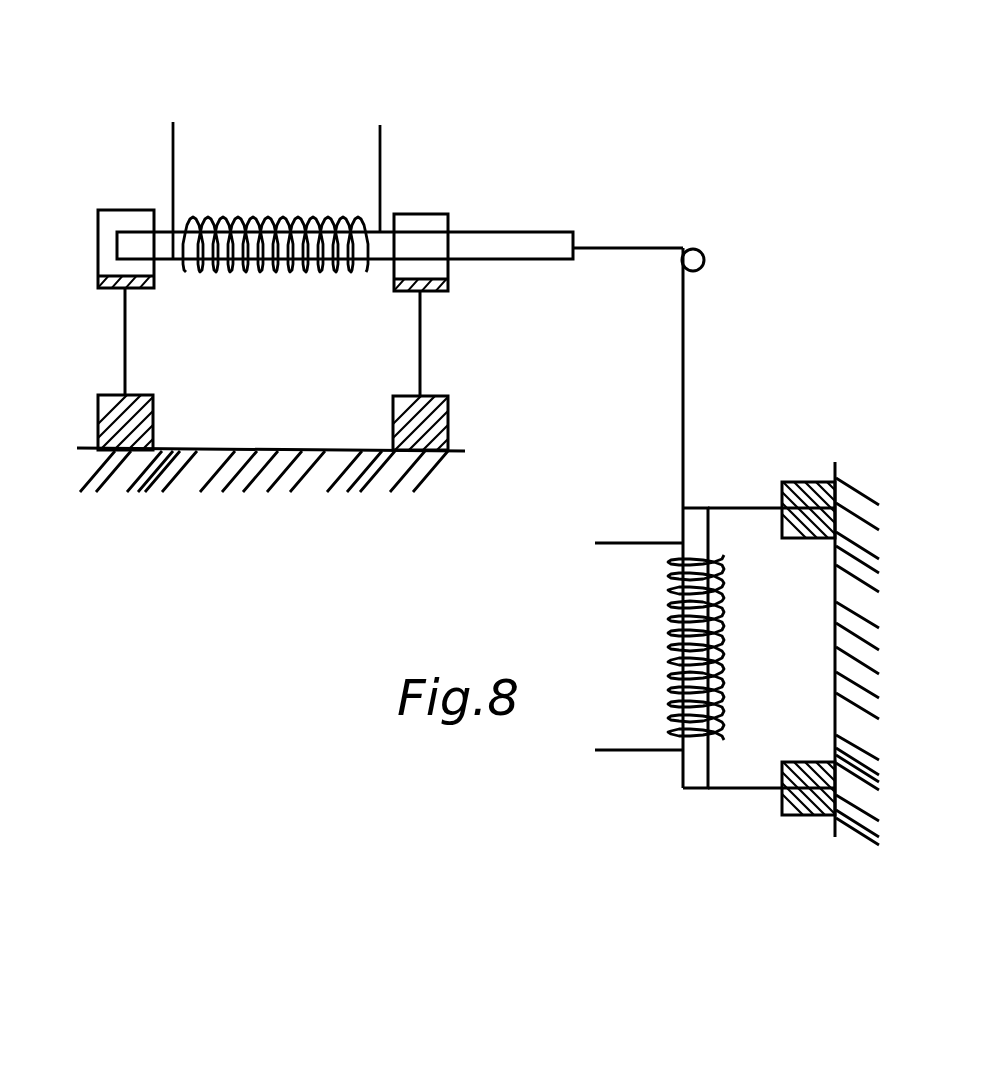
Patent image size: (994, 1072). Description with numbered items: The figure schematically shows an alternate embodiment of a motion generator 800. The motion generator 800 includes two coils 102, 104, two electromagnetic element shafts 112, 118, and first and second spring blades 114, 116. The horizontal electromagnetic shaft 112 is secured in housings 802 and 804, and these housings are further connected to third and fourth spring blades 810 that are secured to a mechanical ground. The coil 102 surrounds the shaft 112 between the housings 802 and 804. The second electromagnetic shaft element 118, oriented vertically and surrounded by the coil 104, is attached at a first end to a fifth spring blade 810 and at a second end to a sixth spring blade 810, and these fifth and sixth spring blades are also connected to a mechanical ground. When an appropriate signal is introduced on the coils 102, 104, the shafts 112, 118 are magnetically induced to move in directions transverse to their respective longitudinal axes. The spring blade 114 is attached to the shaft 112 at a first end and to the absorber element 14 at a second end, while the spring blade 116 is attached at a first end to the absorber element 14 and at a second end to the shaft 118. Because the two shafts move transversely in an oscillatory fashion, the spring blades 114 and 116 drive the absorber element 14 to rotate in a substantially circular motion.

The motion generator 800 is at (560, 102).
The housing 802 is at (108, 210).
The housing 804 is at (438, 212).
The coil 102 is at (378, 155).
The electromagnetic element shaft 112 is at (390, 262).
The first spring blade 114 is at (620, 247).
The absorber element 14 is at (702, 250).
The second spring blade 116 is at (686, 306).
The coil 104 is at (608, 543).
The second electromagnetic shaft element 118 is at (708, 533).
The spring blade 810 is at (125, 348).